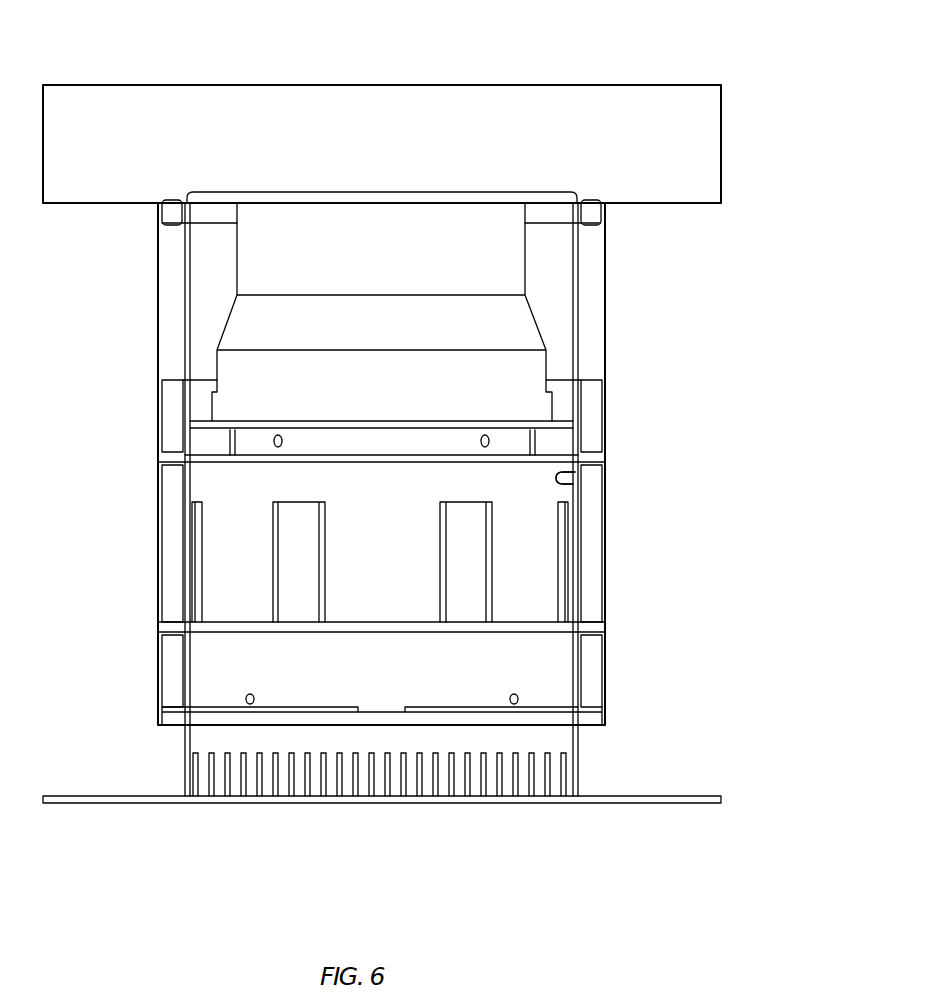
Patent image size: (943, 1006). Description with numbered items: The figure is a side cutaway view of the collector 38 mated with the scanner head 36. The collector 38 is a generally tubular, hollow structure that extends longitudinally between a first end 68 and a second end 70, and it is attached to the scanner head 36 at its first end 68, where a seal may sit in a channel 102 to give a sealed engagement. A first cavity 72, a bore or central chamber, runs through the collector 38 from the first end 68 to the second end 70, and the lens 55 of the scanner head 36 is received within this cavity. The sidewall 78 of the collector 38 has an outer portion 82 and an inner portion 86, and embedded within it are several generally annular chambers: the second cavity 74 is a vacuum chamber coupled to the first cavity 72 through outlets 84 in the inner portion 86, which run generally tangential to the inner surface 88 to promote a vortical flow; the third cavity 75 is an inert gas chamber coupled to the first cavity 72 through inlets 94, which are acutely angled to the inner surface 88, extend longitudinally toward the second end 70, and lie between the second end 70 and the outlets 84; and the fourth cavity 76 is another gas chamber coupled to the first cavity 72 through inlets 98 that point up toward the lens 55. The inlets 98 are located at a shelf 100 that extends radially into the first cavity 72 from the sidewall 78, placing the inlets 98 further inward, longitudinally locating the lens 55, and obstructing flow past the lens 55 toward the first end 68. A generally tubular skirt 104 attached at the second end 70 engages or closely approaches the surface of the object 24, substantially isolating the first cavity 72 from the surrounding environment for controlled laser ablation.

The scanner head 36 is at (659, 83).
The first end 68 is at (147, 203).
The channel 102 is at (588, 212).
The lens 55 is at (533, 315).
The sidewall 78 is at (607, 327).
The collector 38 is at (613, 355).
The shelf 100 is at (207, 423).
The fourth cavity 76 is at (172, 415).
The inner portion 86 is at (575, 474).
The inner surface 88 is at (565, 478).
The outer portion 82 is at (607, 490).
The second cavity 74 is at (172, 547).
The outlets 84 is at (292, 567).
The third cavity 75 is at (172, 665).
The second end 70 is at (160, 726).
The inlets 94 is at (254, 697).
The inlets 98 is at (278, 448).
The first cavity 72 is at (308, 680).
The skirt 104 is at (580, 760).
The object 24 is at (683, 804).